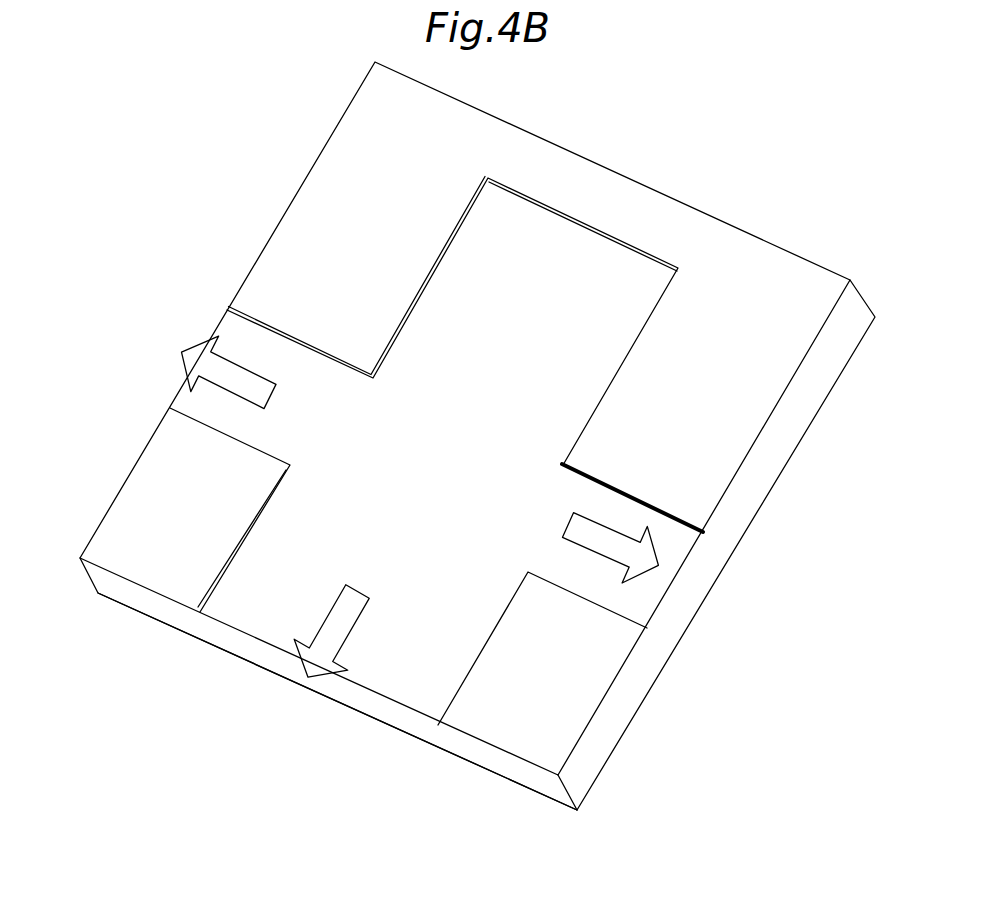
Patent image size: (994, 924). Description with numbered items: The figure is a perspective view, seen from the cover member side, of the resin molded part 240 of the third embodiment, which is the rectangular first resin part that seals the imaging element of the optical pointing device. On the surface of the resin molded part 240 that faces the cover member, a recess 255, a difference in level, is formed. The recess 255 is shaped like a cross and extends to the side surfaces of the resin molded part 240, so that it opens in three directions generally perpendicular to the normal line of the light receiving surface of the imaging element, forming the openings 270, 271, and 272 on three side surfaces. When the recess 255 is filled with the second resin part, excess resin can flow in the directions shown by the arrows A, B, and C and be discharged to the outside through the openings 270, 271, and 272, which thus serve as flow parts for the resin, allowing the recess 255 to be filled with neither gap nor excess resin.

The resin molded part 240 is at (563, 670).
The recess 255 is at (630, 296).
The opening 270 is at (180, 391).
The opening 271 is at (692, 558).
The opening 272 is at (395, 708).
The arrow A is at (242, 368).
The arrow B is at (613, 531).
The arrow C is at (348, 635).